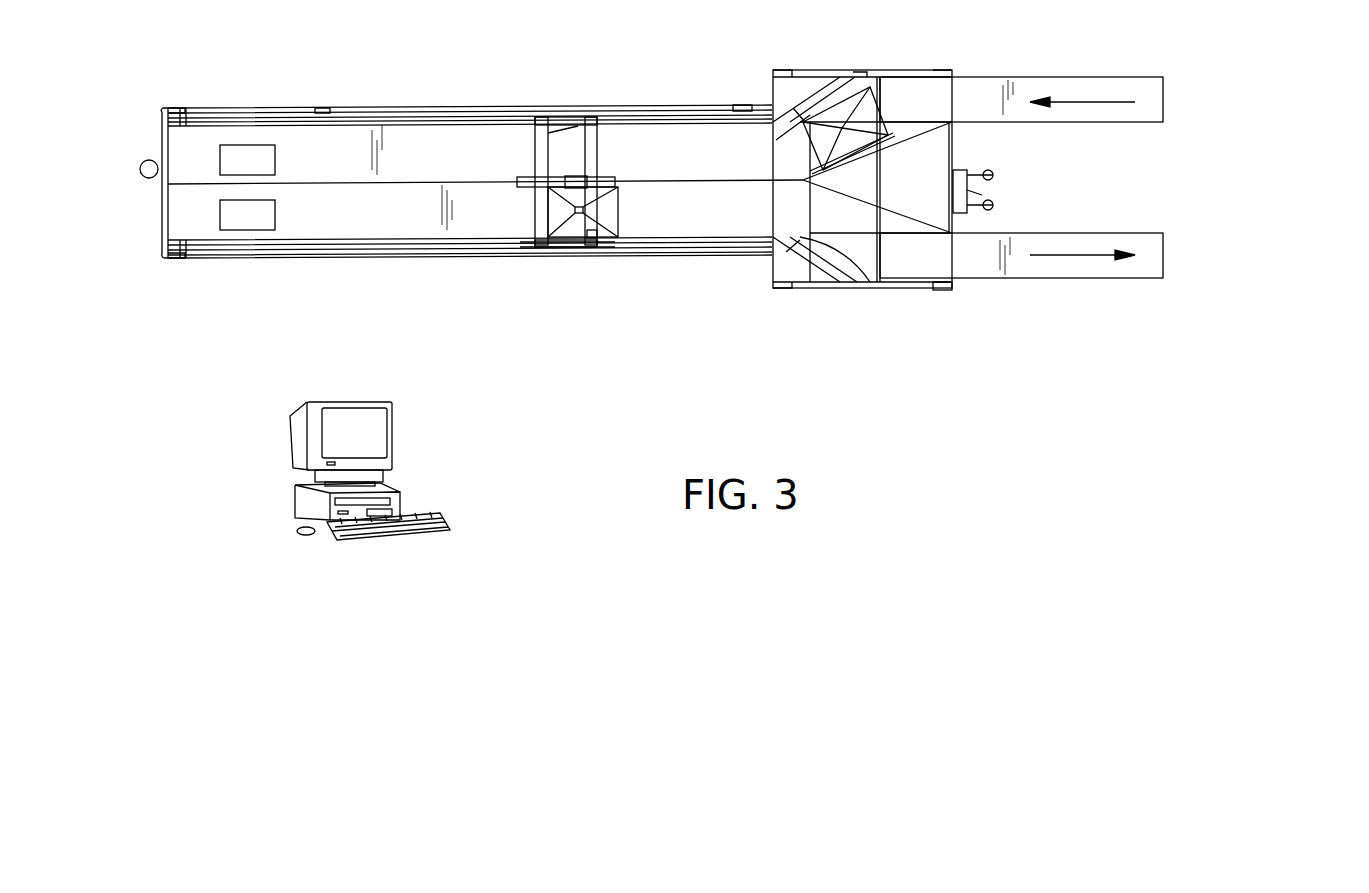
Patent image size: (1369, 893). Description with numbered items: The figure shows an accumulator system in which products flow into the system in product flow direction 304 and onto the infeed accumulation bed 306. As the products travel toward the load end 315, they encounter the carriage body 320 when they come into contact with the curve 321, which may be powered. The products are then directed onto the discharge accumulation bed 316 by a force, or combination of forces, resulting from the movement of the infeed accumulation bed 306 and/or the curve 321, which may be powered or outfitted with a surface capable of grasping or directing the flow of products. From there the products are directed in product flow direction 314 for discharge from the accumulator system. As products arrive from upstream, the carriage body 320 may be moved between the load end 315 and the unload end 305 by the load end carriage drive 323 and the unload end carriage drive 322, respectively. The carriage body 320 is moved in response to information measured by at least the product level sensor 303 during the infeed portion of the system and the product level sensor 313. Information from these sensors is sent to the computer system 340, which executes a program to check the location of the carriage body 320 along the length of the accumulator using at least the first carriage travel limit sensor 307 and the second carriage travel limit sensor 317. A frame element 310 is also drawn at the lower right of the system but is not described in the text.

The product level sensor 303 is at (847, 128).
The product flow direction 304 is at (1163, 85).
The unload end 305 is at (1056, 179).
The infeed accumulation bed 306 is at (247, 160).
The first carriage travel limit sensor 307 is at (600, 238).
The frame base 310 is at (947, 290).
The product level sensor 313 is at (578, 214).
The product flow direction 314 is at (1163, 262).
The load end 315 is at (428, 181).
The discharge accumulation bed 316 is at (247, 215).
The second carriage travel limit sensor 317 is at (534, 247).
The carriage body 320 is at (541, 112).
The curve 321 is at (548, 157).
The unload end carriage drive 322 is at (992, 192).
The load end carriage drive 323 is at (148, 180).
The computer system 340 is at (328, 402).